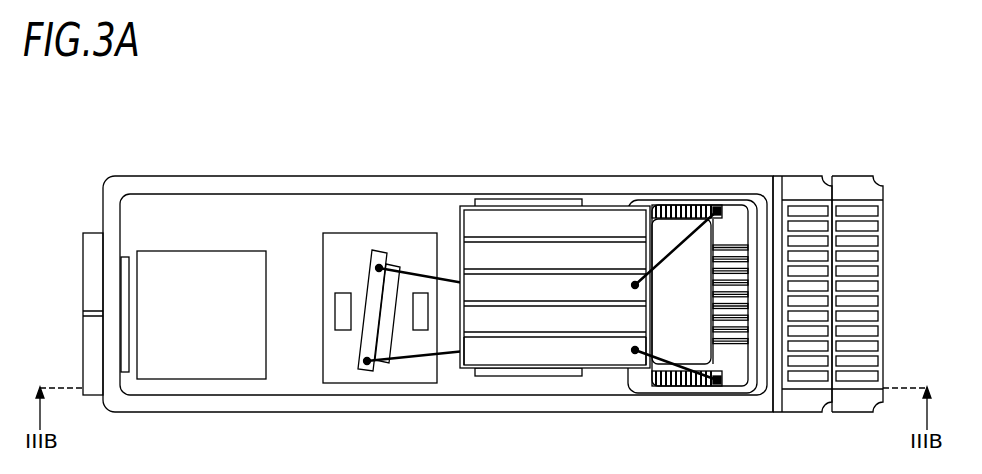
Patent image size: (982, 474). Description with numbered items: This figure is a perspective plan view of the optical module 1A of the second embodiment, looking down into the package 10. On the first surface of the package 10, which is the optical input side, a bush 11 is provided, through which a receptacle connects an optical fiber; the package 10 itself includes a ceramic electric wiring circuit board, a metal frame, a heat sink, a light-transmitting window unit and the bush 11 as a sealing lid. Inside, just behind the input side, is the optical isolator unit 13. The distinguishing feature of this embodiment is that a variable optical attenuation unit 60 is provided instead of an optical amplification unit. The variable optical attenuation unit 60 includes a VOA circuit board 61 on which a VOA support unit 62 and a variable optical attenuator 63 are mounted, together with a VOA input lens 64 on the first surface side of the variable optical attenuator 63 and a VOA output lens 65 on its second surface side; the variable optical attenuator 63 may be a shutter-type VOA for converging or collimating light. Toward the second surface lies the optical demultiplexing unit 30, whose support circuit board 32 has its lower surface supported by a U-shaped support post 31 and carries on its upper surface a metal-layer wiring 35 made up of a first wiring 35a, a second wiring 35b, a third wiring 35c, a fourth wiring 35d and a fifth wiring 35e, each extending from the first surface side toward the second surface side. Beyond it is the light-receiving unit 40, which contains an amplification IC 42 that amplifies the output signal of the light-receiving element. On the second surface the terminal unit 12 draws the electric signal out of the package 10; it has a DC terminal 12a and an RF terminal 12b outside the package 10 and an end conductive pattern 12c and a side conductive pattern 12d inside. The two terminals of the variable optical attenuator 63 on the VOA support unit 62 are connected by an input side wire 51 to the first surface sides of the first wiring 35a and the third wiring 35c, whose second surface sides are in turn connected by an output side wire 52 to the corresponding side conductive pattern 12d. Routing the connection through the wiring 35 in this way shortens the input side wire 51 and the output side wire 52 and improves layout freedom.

The optical module 1A is at (245, 150).
The package 10 is at (147, 403).
The bush 11 is at (97, 258).
The terminal unit 12 is at (811, 183).
The DC terminal 12a is at (800, 405).
The RF terminal 12b is at (848, 405).
The end conductive pattern 12c is at (735, 347).
The side conductive pattern 12d is at (668, 381).
The optical isolator unit 13 is at (203, 357).
The optical demultiplexing unit 30 is at (598, 198).
The support post 31 is at (513, 373).
The support circuit board 32 is at (463, 363).
The wiring 35 is at (618, 220).
The first wiring 35a is at (608, 348).
The second wiring 35b is at (573, 320).
The third wiring 35c is at (538, 293).
The fourth wiring 35d is at (560, 256).
The fifth wiring 35e is at (519, 222).
The light-receiving unit 40 is at (678, 200).
The amplification IC 42 is at (690, 337).
The input side wire 51 is at (428, 268).
The output side wire 52 is at (700, 208).
The variable optical attenuation unit 60 is at (375, 228).
The VOA circuit board 61 is at (408, 368).
The VOA support unit 62 is at (365, 348).
The variable optical attenuator 63 is at (382, 350).
The VOA input lens 64 is at (343, 312).
The VOA output lens 65 is at (423, 322).